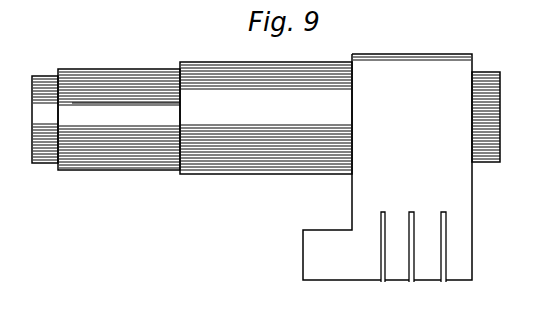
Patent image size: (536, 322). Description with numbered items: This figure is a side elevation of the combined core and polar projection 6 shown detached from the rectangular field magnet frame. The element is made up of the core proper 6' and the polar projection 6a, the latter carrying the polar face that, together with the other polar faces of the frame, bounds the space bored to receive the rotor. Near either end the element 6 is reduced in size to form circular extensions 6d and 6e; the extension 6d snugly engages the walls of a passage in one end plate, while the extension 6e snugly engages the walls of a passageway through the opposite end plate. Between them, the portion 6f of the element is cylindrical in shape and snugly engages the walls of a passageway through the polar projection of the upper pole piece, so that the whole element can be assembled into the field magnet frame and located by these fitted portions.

The combined core and polar projection 6 is at (387, 156).
The core proper 6' is at (266, 107).
The polar projection 6a is at (443, 237).
The circular extension 6d is at (41, 77).
The circular extension 6e is at (488, 78).
The cylindrical portion 6f is at (134, 66).